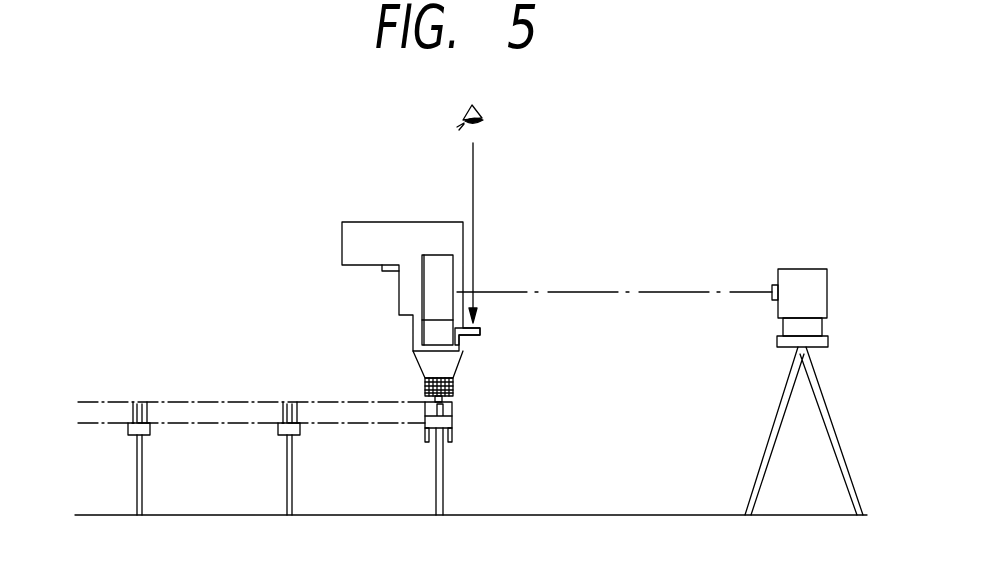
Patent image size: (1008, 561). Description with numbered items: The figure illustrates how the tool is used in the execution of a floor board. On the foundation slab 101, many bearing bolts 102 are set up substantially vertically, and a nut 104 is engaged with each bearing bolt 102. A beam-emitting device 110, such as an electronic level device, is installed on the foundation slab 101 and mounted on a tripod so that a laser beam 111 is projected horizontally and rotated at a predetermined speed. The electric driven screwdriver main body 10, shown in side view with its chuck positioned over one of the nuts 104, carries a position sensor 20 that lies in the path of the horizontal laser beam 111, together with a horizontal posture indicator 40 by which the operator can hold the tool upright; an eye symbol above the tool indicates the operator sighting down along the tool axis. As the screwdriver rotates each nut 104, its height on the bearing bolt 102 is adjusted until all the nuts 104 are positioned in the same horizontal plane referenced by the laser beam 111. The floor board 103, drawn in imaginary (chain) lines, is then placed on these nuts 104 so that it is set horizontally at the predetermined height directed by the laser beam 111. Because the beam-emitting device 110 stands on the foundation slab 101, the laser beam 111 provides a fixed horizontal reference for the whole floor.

The electric driven screwdriver main body 10 is at (417, 221).
The position sensor 20 is at (423, 290).
The horizontal posture indicator 40 is at (479, 335).
The foundation slab 101 is at (580, 512).
The bearing bolt 102 is at (444, 478).
The floor board 103 is at (213, 401).
The nut 104 is at (450, 421).
The beam-emitting device 110 is at (812, 268).
The laser beam 111 is at (634, 290).